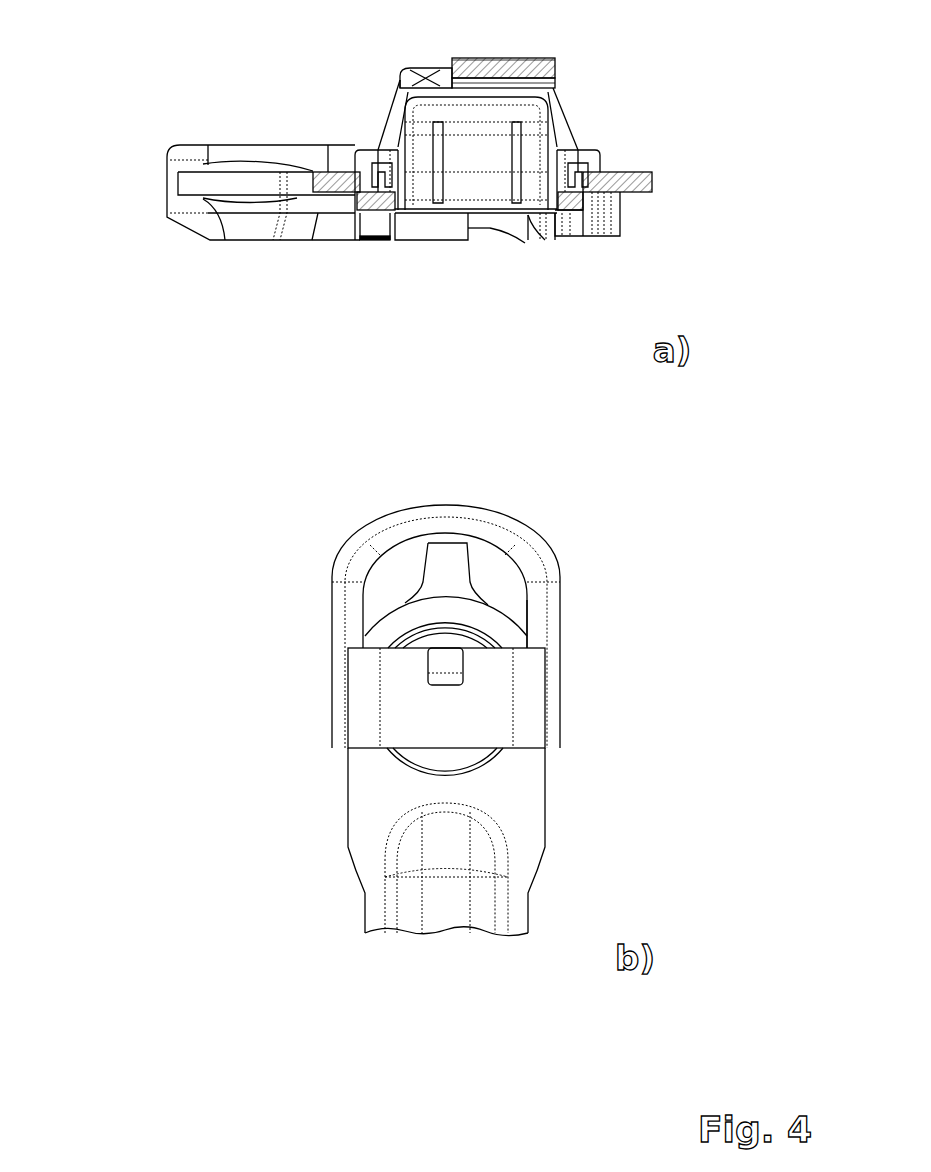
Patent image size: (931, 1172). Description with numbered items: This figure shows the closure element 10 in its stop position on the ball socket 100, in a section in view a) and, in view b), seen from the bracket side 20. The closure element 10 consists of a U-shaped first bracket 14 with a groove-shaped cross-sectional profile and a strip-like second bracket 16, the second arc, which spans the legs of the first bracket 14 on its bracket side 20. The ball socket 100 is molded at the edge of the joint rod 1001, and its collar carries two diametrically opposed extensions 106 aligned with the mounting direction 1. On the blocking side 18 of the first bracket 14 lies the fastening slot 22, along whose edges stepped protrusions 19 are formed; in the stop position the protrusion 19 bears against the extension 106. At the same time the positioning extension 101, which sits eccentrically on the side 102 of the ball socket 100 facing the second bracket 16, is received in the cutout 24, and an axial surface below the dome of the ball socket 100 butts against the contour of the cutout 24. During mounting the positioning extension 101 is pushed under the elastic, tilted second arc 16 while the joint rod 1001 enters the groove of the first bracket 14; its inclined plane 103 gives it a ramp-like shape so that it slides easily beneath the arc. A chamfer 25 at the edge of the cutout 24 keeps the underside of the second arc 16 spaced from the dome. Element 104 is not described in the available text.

The mounting direction 1 is at (67, 188).
The closure element 10 is at (178, 140).
The first bracket 14 is at (538, 603).
The second bracket 16 is at (507, 68).
The blocking side 18 is at (500, 240).
The protrusion 19 is at (492, 222).
The bracket side 20 is at (338, 144).
The fastening slot 22 is at (420, 220).
The cutout 24 is at (428, 73).
The chamfer 25 is at (413, 80).
The ball socket 100 is at (538, 127).
The positioning extension 101 is at (483, 66).
The side 102 is at (533, 78).
The inclined plane 103 is at (425, 72).
The retaining element 104 is at (528, 216).
The extension 106 is at (373, 227).
The joint rod 1001 is at (312, 816).